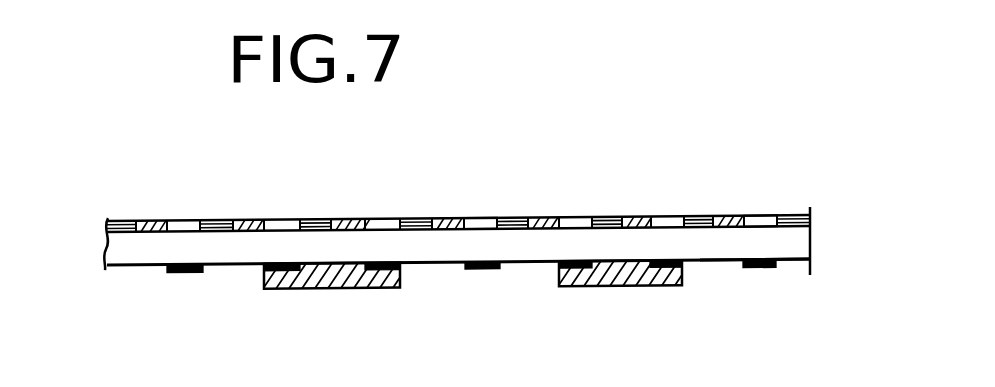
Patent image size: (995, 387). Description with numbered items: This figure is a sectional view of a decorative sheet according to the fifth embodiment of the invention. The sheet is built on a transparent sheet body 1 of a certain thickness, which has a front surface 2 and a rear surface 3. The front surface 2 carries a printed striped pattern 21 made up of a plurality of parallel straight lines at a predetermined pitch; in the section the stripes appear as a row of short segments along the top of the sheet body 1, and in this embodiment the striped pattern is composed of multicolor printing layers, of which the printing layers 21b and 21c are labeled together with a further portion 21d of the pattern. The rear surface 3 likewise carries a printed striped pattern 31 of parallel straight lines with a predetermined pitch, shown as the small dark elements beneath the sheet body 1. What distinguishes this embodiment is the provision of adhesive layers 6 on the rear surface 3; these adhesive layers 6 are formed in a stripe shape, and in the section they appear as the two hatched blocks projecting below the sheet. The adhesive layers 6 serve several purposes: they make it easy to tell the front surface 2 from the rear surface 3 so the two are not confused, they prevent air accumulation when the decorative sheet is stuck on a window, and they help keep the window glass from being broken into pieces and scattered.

The sheet body 1 is at (790, 241).
The front surface 2 is at (480, 188).
The striped pattern 21 is at (757, 214).
The multicolor printing layer 21b is at (450, 219).
The multicolor printing layer 21c is at (482, 219).
The conductor pattern portion 21d is at (418, 219).
The rear surface 3 is at (787, 262).
The striped pattern 31 is at (760, 268).
The adhesive layer 6 is at (352, 277).